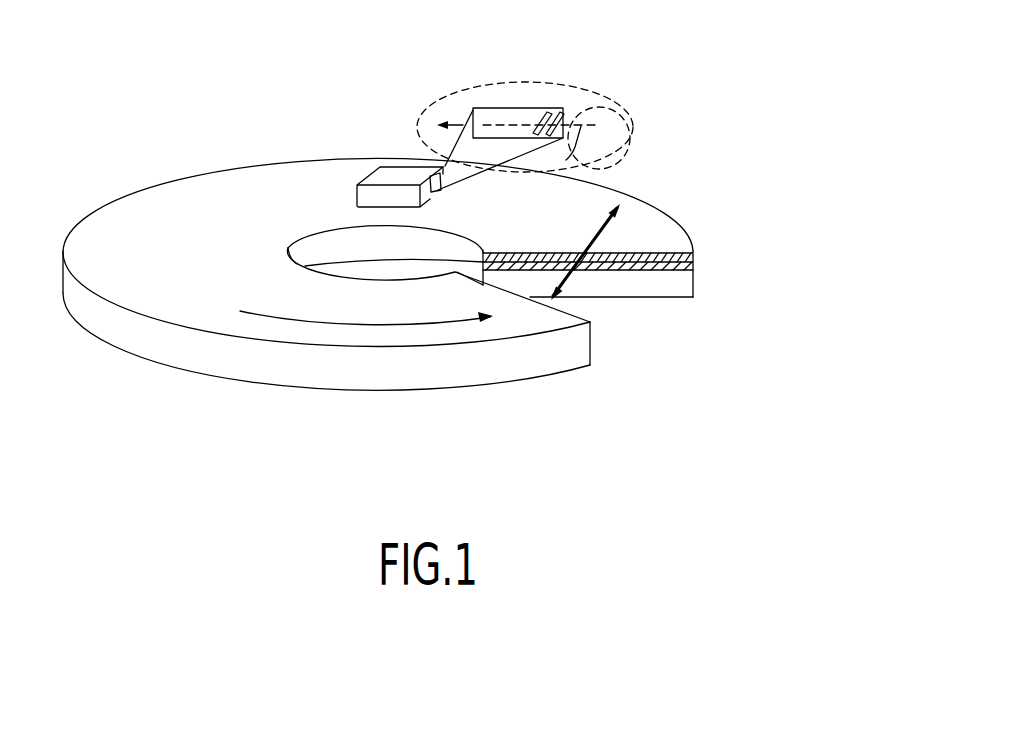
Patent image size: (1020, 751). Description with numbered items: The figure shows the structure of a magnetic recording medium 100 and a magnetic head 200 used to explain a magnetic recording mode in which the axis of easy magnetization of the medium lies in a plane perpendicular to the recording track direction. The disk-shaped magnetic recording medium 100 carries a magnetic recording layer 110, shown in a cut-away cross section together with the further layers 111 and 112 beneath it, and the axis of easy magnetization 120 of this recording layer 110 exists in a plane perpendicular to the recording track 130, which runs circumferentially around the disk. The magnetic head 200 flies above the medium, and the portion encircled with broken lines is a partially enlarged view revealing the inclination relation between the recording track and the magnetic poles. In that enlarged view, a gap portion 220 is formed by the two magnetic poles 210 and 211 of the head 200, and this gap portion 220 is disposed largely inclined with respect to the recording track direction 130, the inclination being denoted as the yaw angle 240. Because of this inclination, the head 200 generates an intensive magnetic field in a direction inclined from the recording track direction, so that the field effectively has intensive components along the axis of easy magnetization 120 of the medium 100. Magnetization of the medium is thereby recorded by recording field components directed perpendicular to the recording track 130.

The magnetic recording medium 100 is at (347, 378).
The magnetic recording layer 110 is at (697, 256).
The substrate 111 is at (613, 292).
The underlayer 112 is at (698, 272).
The axis of easy magnetization 120 is at (593, 235).
The recording track 130 is at (434, 323).
The magnetic head 200 is at (409, 170).
The magnetic pole 210 is at (553, 112).
The magnetic pole 211 is at (617, 112).
The gap portion 220 is at (560, 110).
The yaw angle 240 is at (606, 155).